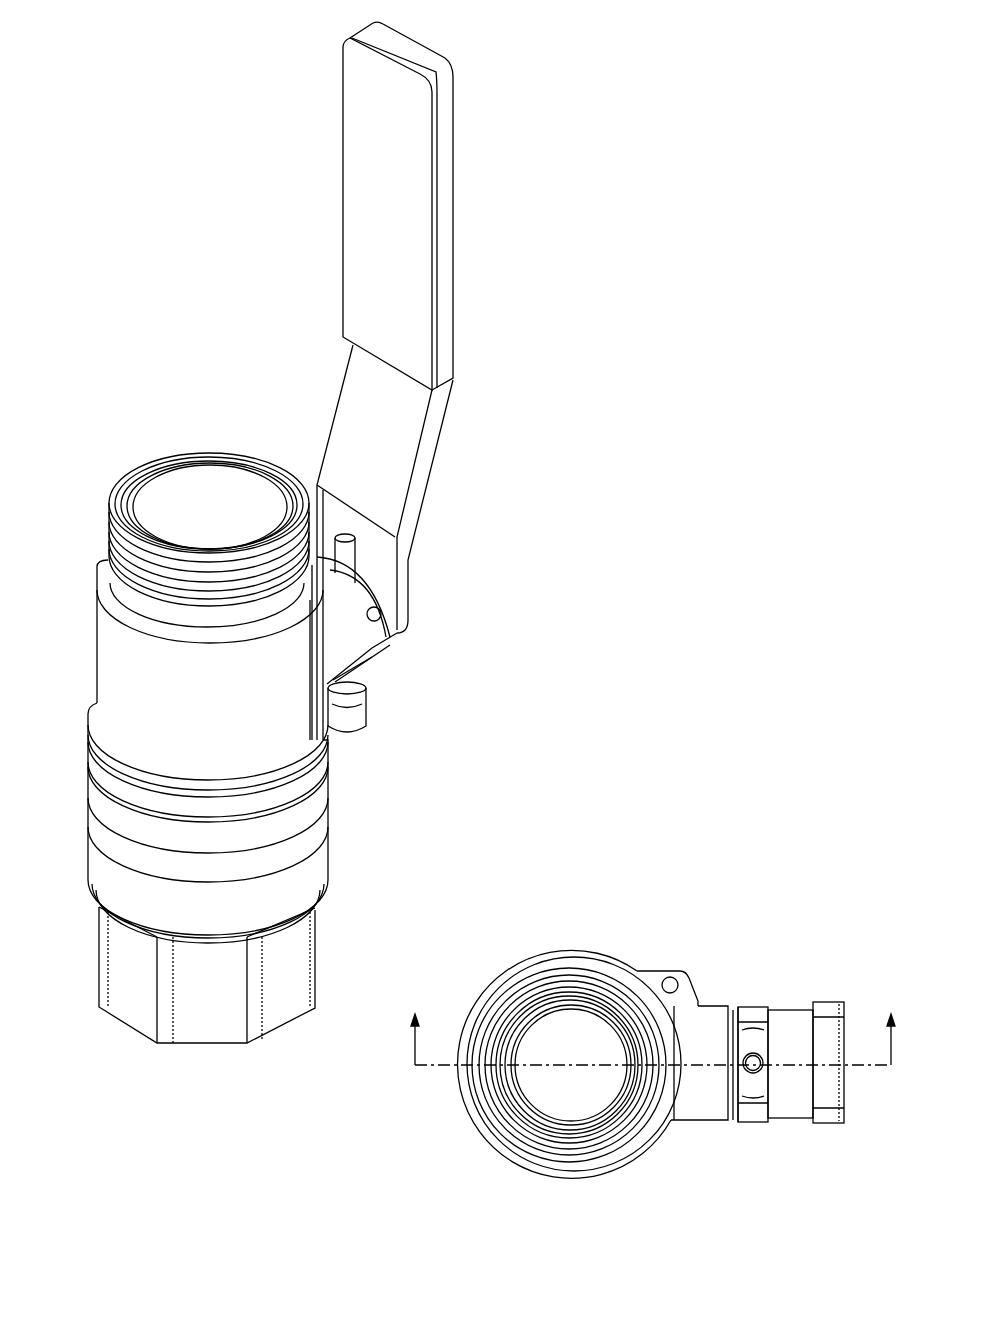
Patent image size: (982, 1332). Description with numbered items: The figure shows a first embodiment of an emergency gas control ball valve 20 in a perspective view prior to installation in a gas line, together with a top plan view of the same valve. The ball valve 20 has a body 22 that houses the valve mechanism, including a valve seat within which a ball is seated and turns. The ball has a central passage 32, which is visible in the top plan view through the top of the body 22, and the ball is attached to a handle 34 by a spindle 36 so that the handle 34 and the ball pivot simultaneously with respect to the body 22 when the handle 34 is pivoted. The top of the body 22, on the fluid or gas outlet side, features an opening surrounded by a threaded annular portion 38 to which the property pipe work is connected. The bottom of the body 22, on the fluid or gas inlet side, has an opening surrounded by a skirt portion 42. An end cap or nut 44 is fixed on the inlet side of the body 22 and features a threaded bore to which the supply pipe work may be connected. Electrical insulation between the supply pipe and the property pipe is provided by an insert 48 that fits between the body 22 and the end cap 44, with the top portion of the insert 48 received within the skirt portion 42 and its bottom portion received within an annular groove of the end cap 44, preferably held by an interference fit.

In FIG. 1, the ball valve 20 is at (92, 344).
In FIG. 2, the ball valve 20 is at (606, 857).
In FIG. 1, the body 22 is at (113, 662).
In FIG. 2, the body 22 is at (527, 963).
In FIG. 2, the central passage 32 is at (585, 1037).
In FIG. 1, the handle 34 is at (462, 232).
In FIG. 2, the handle 34 is at (847, 1107).
In FIG. 1, the spindle 36 is at (367, 598).
In FIG. 2, the spindle 36 is at (752, 1122).
In FIG. 1, the threaded annular portion 38 is at (110, 500).
In FIG. 2, the threaded annular portion 38 is at (609, 1158).
In FIG. 1, the skirt portion 42 is at (325, 784).
In FIG. 1, the end cap 44 is at (282, 1000).
In FIG. 1, the insert 48 is at (110, 835).